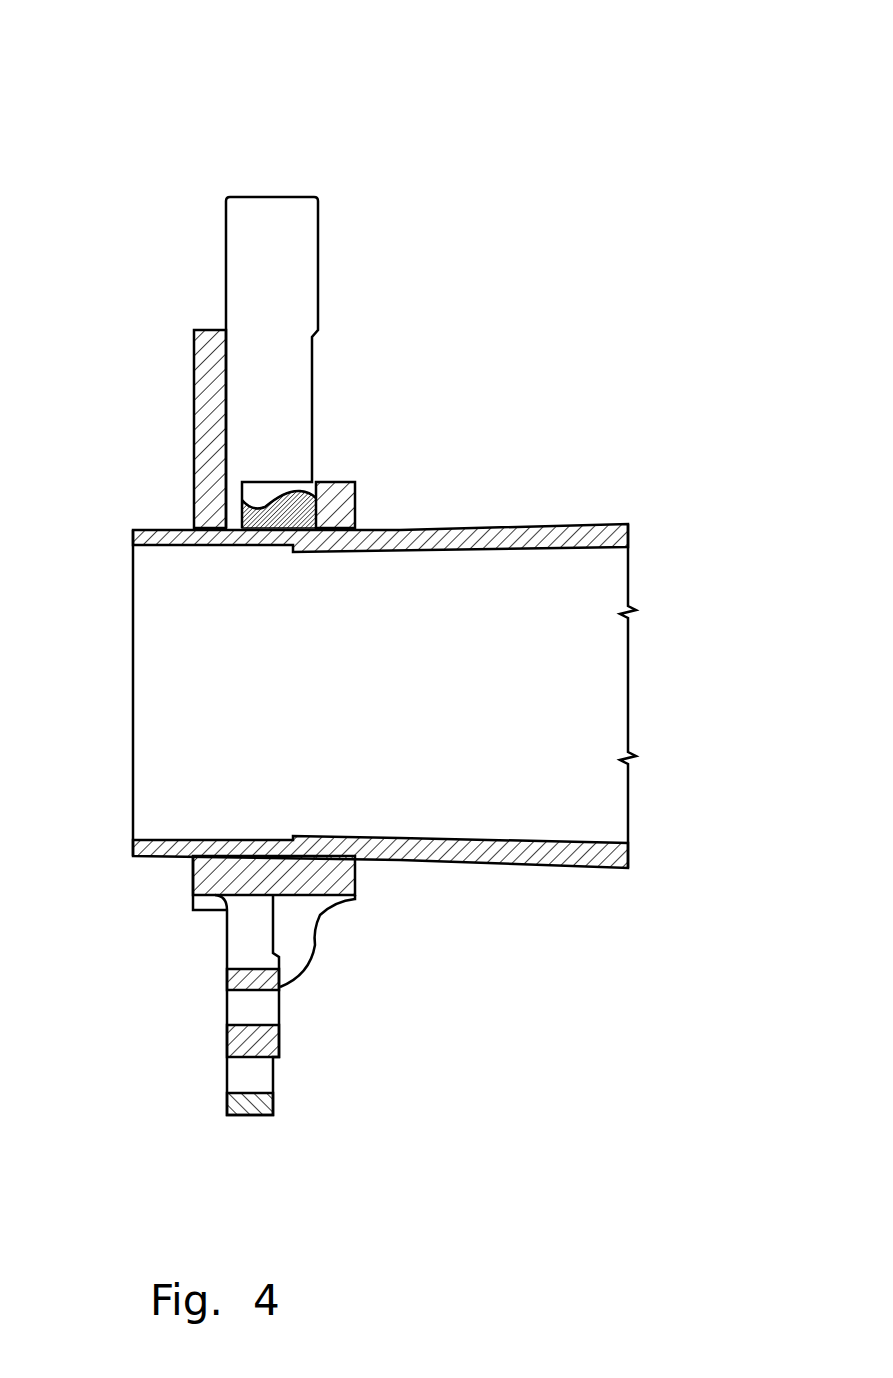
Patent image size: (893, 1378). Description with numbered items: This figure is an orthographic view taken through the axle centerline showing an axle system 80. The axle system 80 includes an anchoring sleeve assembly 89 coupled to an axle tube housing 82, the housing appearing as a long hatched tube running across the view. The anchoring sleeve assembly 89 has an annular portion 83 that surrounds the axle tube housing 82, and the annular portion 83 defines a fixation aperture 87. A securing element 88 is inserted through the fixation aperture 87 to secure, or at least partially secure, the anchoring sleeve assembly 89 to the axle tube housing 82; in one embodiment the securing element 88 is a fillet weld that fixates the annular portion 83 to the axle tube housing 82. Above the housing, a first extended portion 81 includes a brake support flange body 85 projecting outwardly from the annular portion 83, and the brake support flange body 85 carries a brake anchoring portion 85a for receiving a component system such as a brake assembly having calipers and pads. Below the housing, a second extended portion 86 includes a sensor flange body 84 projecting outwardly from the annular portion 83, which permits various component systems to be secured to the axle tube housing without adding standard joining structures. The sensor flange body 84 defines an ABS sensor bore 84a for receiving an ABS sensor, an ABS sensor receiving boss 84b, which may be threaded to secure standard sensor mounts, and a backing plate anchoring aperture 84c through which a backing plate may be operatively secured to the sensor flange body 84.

The axle system 80 is at (442, 125).
The first extended portion 81 is at (160, 375).
The axle tube housing 82 is at (203, 712).
The annular portion 83 is at (360, 503).
The sensor flange body 84 is at (222, 962).
The ABS sensor bore 84a is at (250, 938).
The ABS sensor receiving boss 84b is at (256, 1009).
The backing plate anchoring aperture 84c is at (250, 1076).
The brake support flange body 85 is at (193, 347).
The brake anchoring portion 85a is at (300, 273).
The second extended portion 86 is at (172, 1047).
The fixation aperture 87 is at (270, 495).
The securing element 88 is at (250, 498).
The anchoring sleeve assembly 89 is at (523, 350).